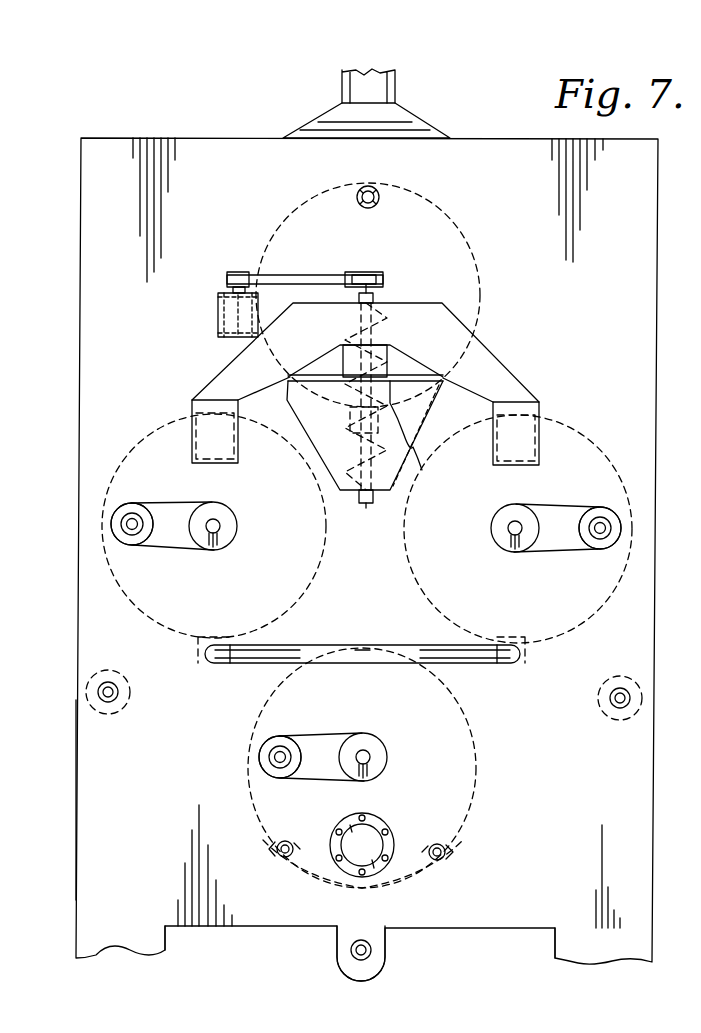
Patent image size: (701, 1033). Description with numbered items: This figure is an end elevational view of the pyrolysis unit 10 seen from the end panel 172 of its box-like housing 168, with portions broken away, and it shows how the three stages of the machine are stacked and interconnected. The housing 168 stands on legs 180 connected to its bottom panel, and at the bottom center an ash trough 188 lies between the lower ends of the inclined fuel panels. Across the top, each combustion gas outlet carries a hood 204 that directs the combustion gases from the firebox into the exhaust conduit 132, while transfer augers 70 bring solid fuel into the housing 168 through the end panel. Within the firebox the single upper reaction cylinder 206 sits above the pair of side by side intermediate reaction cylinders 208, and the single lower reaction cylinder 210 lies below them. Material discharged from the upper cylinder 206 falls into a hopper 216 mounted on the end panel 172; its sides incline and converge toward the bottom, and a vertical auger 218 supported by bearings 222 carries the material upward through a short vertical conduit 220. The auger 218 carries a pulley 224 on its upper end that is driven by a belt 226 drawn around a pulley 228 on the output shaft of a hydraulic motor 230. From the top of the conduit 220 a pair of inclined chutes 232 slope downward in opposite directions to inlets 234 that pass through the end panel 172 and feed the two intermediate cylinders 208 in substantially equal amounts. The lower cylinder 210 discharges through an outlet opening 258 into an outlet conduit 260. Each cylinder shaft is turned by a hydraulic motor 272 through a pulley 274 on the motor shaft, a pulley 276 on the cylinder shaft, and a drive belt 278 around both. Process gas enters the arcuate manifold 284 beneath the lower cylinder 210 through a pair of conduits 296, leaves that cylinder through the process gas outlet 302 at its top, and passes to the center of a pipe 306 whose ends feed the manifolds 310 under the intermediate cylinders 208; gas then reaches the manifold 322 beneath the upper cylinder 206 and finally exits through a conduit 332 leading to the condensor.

The pyrolysis unit 10 is at (124, 96).
The transfer augers 70 is at (110, 672).
The exhaust conduit 132 is at (397, 96).
The housing 168 is at (237, 127).
The end panel 172 is at (78, 850).
The legs 180 is at (165, 938).
The ash trough 188 is at (340, 943).
The hood 204 is at (437, 130).
The upper reaction cylinder 206 is at (460, 216).
The intermediate reaction cylinders 208 is at (156, 437).
The lower reaction cylinder 210 is at (470, 756).
The hopper 216 is at (398, 455).
The vertical auger 218 is at (360, 504).
The vertical conduit 220 is at (392, 358).
The bearings 222 is at (375, 303).
The pulley 224 is at (372, 272).
The belt 226 is at (278, 275).
The pulley 228 is at (236, 272).
The hydraulic motor 230 is at (218, 307).
The inclined chutes 232 is at (232, 360).
The inlets 234 is at (222, 455).
The outlet opening 258 is at (358, 836).
The outlet conduit 260 is at (385, 840).
The hydraulic motors 272 is at (128, 545).
The pulley 274 is at (134, 520).
The pulley 276 is at (230, 545).
The drive belt 278 is at (171, 546).
The arcuate manifold 284 is at (397, 878).
The conduits 296 is at (288, 858).
The process gas outlet 302 is at (362, 655).
The pipe 306 is at (286, 660).
The manifolds 310 is at (196, 664).
The manifold 322 is at (350, 411).
The conduit 332 is at (371, 185).